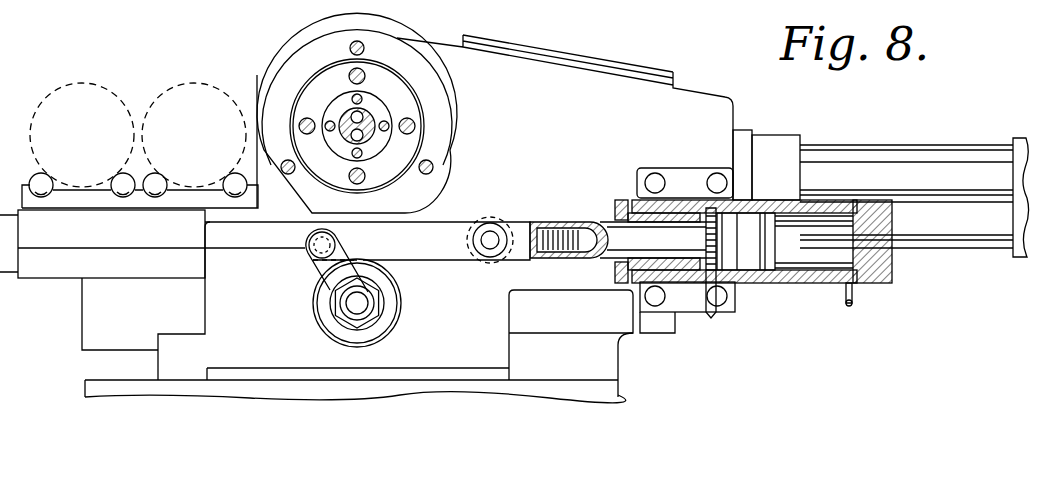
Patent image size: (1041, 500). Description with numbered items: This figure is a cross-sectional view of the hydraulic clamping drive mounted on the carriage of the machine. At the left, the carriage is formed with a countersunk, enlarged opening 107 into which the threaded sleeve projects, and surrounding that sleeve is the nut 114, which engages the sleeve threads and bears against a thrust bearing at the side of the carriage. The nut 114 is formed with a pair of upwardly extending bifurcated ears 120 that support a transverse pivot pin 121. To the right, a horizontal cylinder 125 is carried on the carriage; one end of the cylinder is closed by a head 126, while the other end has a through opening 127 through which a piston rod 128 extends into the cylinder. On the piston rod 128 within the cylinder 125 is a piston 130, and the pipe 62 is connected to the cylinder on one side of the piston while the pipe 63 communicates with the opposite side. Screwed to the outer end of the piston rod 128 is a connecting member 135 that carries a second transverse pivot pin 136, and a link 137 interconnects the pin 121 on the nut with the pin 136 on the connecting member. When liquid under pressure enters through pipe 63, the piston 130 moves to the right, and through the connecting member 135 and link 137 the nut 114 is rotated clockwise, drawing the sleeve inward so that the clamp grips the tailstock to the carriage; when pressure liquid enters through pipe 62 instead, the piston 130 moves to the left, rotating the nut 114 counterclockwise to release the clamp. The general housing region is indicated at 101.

The housing 101 is at (733, 0).
The countersunk opening 107 is at (158, 3).
The nut 114 is at (330, 316).
The bifurcated ears 120 is at (320, 270).
The transverse pivot pin 121 is at (303, 249).
The horizontal cylinder 125 is at (805, 283).
The head 126 is at (893, 263).
The through opening 127 is at (683, 198).
The piston rod 128 is at (604, 221).
The piston 130 is at (745, 245).
The connecting member 135 is at (525, 221).
The transverse pivot pin 136 is at (480, 222).
The link 137 is at (450, 250).
The pipe 62 is at (855, 293).
The pipe 63 is at (705, 305).